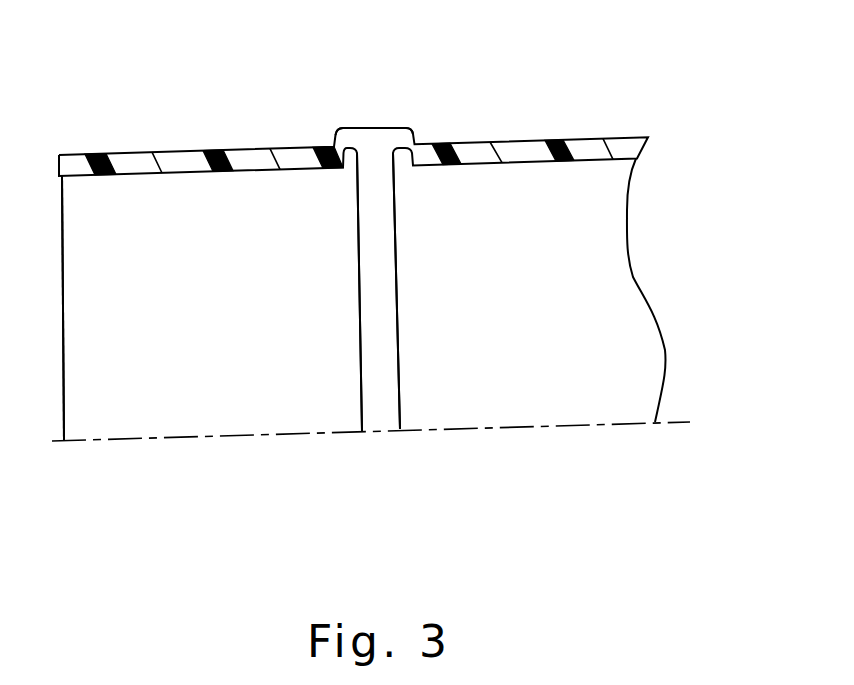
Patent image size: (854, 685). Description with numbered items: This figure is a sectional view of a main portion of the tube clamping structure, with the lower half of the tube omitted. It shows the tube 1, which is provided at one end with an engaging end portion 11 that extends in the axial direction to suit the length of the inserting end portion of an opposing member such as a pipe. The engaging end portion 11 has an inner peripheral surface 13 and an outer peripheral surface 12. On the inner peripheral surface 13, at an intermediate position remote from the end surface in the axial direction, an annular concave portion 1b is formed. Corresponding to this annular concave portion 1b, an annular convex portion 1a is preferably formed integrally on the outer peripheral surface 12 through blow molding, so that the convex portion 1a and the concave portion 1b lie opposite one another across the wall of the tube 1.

The tube 1 is at (623, 138).
The annular convex portion 1a is at (370, 128).
The annular concave portion 1b is at (373, 130).
The engaging end portion 11 is at (481, 155).
The outer peripheral surface 12 is at (169, 152).
The inner peripheral surface 13 is at (172, 176).